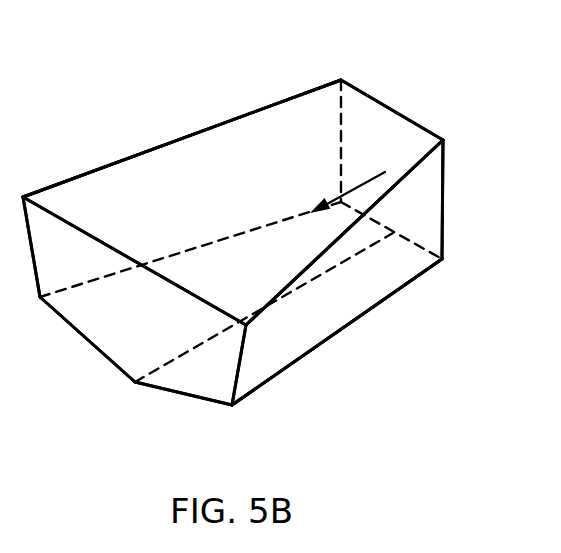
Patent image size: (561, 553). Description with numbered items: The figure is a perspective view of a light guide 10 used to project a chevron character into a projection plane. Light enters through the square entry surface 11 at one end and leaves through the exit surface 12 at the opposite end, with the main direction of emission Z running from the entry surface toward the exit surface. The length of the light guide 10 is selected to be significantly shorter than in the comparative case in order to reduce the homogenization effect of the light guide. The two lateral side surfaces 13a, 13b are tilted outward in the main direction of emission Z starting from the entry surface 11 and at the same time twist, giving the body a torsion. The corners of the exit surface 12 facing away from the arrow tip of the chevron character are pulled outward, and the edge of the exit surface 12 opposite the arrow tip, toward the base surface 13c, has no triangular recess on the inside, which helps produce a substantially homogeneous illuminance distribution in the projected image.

The light guide 10 is at (93, 183).
The entry surface 11 is at (391, 138).
The exit surface 12 is at (102, 318).
The lateral side surface 13a is at (205, 160).
The lateral side surface 13b is at (347, 298).
The base surface 13c is at (305, 118).
The main direction of emission Z is at (350, 190).